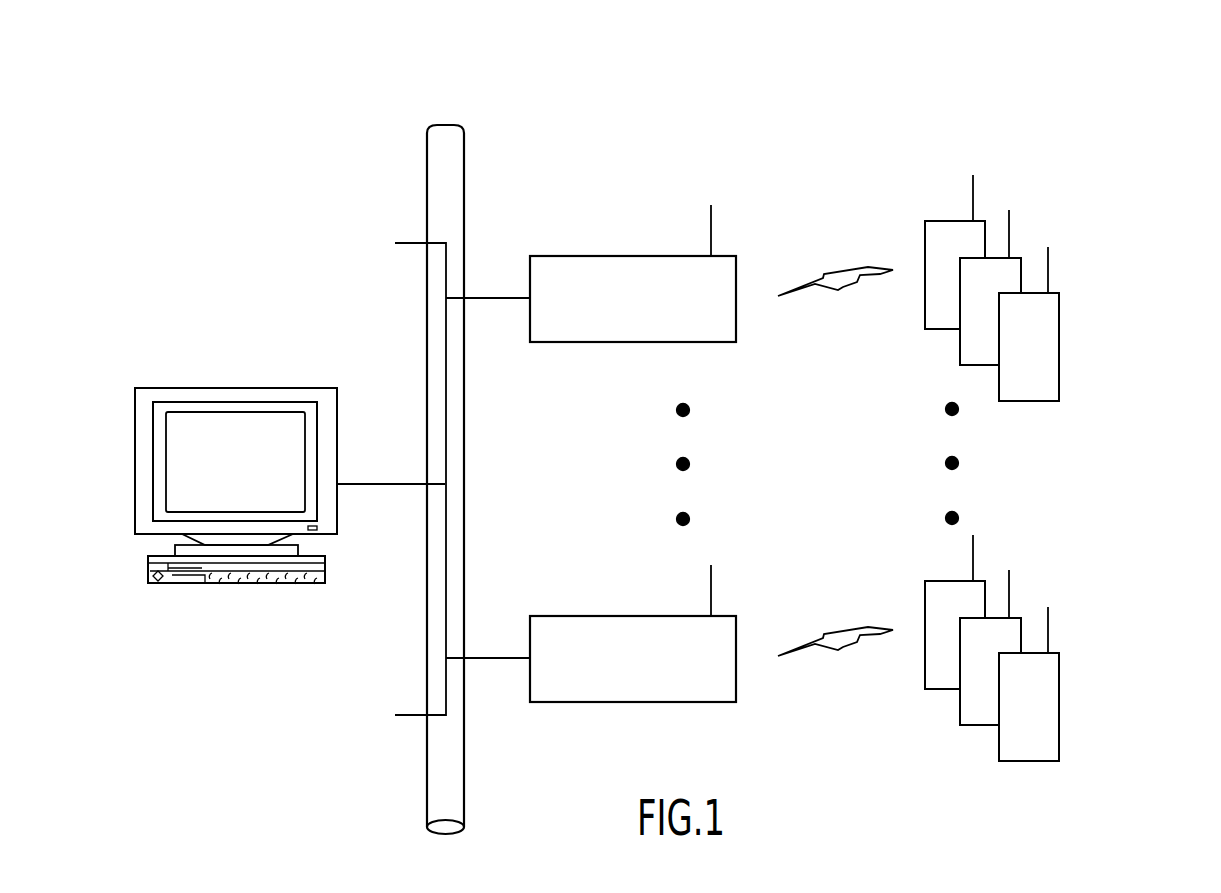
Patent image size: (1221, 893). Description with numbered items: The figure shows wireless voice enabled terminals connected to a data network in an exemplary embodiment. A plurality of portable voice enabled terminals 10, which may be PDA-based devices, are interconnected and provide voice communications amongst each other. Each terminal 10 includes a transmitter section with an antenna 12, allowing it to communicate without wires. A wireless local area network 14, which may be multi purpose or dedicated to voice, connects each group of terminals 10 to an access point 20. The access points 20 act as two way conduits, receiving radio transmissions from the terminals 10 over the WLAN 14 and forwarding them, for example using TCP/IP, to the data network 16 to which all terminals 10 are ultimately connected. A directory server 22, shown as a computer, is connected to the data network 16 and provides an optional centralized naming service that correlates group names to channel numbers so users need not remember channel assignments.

The voice enabled terminal 10 is at (1059, 468).
The antenna 12 is at (1048, 260).
The wireless local area network (WLAN) 14 is at (847, 288).
The data network 16 is at (445, 125).
The access point 20 is at (725, 256).
The directory server 22 is at (173, 388).